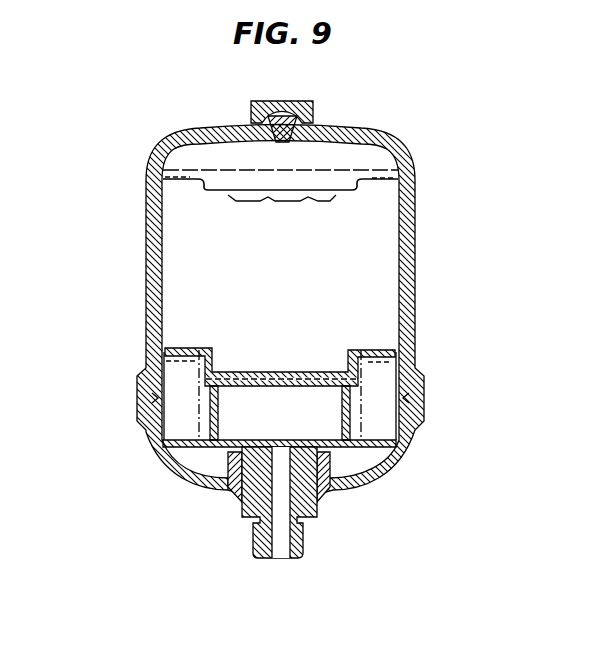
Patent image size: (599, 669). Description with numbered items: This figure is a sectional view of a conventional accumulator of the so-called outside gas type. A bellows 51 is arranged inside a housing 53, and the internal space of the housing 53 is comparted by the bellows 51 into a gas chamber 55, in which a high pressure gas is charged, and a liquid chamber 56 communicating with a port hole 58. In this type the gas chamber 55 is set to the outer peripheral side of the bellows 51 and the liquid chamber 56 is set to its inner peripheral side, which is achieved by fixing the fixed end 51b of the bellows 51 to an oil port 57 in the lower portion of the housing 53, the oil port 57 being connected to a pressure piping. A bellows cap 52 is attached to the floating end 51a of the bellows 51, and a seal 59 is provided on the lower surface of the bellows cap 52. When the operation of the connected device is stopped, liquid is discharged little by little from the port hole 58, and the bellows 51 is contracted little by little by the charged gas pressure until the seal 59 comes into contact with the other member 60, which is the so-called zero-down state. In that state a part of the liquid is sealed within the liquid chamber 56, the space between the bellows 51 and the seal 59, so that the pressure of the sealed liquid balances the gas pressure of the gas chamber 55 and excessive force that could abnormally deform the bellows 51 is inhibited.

The bellows 51 is at (373, 387).
The floating end 51a is at (388, 347).
The fixed end 51b is at (397, 457).
The bellows cap 52 is at (346, 352).
The housing 53 is at (147, 212).
The gas chamber 55 is at (292, 277).
The liquid chamber 56 is at (205, 415).
The oil port 57 is at (313, 515).
The port hole 58 is at (281, 548).
The seal 59 is at (205, 368).
The other member 60 is at (205, 389).